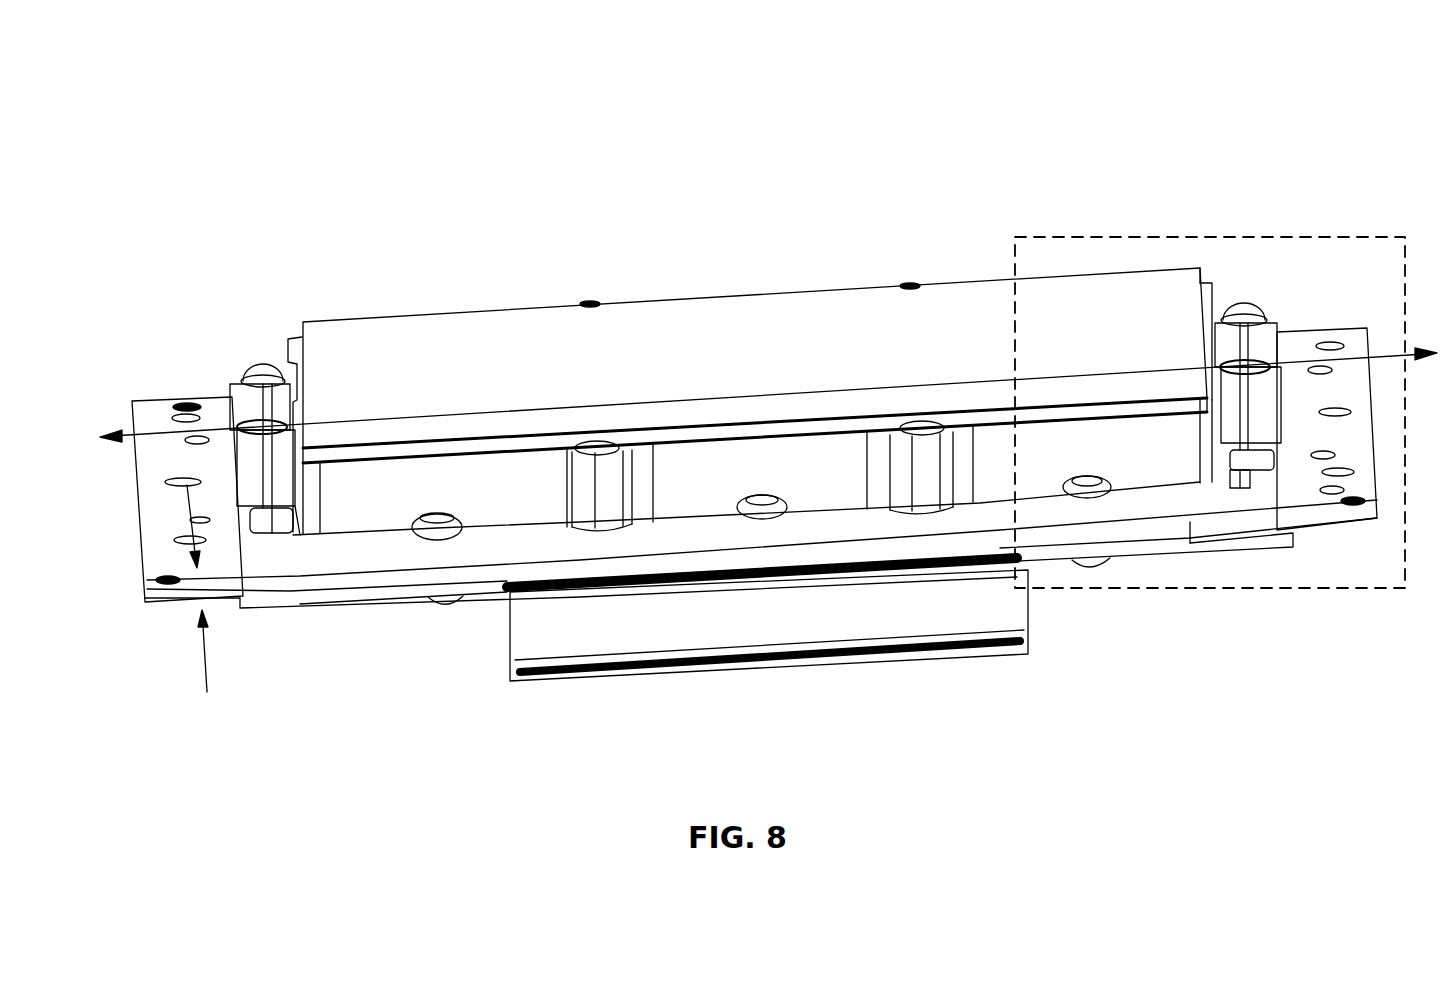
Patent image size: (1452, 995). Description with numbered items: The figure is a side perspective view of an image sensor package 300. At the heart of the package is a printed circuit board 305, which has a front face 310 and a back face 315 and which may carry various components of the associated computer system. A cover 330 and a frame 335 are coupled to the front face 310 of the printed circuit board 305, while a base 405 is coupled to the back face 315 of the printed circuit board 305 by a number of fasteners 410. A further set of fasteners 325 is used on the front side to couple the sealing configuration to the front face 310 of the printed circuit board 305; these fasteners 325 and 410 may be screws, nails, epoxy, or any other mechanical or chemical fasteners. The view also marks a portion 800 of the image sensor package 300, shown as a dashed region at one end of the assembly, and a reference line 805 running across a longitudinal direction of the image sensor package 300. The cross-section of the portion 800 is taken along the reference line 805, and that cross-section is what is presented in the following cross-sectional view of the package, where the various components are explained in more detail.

The image sensor package 300 is at (1185, 110).
The printed circuit board 305 is at (718, 527).
The front face 310 is at (219, 527).
The back face 315 is at (181, 651).
The fasteners 325 is at (263, 363).
The cover 330 is at (433, 340).
The frame 335 is at (367, 507).
The base 405 is at (375, 597).
The fasteners 410 is at (442, 603).
The portion 800 is at (1210, 588).
The reference line 805 is at (158, 433).